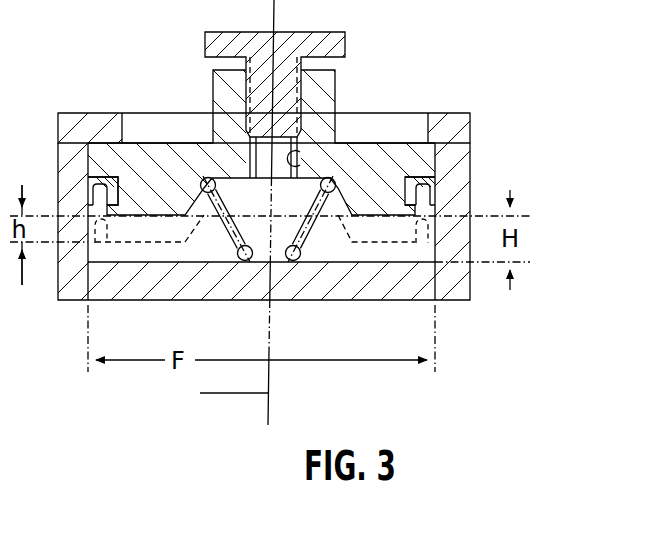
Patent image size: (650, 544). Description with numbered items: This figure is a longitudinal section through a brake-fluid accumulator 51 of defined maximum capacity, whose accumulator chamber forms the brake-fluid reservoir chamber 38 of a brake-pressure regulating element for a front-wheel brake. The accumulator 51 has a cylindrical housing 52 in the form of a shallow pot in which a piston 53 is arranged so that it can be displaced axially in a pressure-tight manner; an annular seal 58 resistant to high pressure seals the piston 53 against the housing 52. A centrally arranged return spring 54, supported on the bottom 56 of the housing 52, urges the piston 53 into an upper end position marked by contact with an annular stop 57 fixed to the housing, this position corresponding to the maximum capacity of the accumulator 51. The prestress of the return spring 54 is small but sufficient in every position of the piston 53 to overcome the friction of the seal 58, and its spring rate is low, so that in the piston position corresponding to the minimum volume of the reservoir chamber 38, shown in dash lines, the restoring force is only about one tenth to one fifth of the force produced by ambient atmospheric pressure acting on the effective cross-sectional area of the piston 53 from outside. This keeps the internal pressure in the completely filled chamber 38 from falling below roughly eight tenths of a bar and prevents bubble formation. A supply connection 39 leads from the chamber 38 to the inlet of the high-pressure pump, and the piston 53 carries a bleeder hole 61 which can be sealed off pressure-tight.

The brake-fluid reservoir chamber 38 is at (326, 240).
The supply connection 39 is at (268, 393).
The fluid accumulator 51 is at (181, 100).
The housing 52 is at (455, 194).
The piston 53 is at (396, 160).
The return spring 54 is at (232, 244).
The bottom 56 is at (378, 292).
The annular stop 57 is at (463, 127).
The annular seal 58 is at (117, 178).
The bleeder hole 61 is at (303, 158).